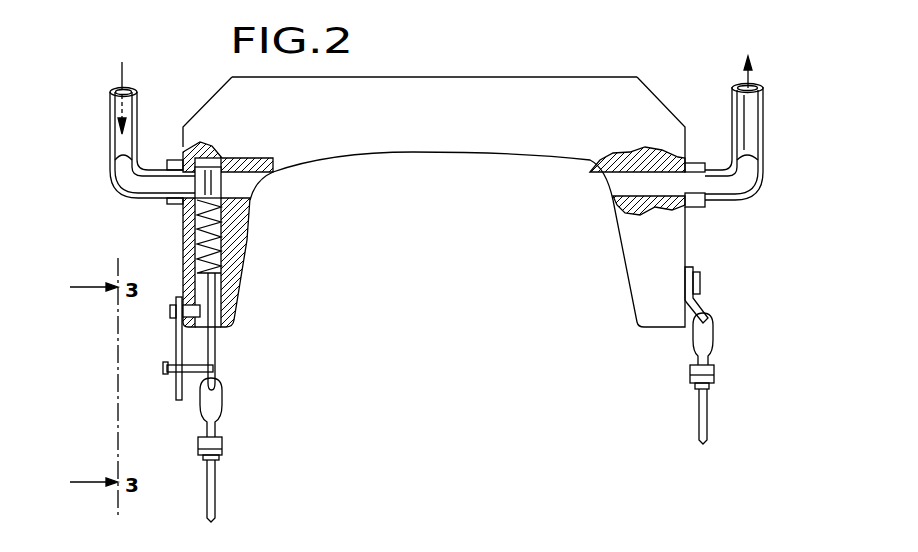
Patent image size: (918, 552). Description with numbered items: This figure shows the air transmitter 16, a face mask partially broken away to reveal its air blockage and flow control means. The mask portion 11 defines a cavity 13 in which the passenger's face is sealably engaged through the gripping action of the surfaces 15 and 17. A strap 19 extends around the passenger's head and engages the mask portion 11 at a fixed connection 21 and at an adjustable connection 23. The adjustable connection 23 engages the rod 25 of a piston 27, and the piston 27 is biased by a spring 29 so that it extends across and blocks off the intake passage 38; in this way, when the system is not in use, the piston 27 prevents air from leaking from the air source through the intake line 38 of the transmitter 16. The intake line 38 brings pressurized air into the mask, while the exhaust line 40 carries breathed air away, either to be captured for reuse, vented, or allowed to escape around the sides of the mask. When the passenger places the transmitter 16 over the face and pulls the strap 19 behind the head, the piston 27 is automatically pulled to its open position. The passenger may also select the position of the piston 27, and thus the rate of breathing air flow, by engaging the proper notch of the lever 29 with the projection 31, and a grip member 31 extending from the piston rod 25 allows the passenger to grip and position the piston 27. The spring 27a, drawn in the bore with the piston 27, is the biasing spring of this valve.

The mask portion 11 is at (442, 127).
The cavity 13 is at (442, 203).
The gripping surface 15 is at (240, 270).
The transmitter 16 is at (512, 74).
The gripping surface 17 is at (620, 265).
The strap 19 is at (708, 420).
The fixed connection 21 is at (708, 312).
The adjustable connection 23 is at (218, 428).
The piston rod 25 is at (216, 348).
The piston 27 is at (209, 178).
The spring 27a is at (198, 236).
The spring 29 is at (177, 348).
The grip member 31 is at (168, 374).
The intake line 38 is at (112, 121).
The exhaust line 40 is at (752, 125).